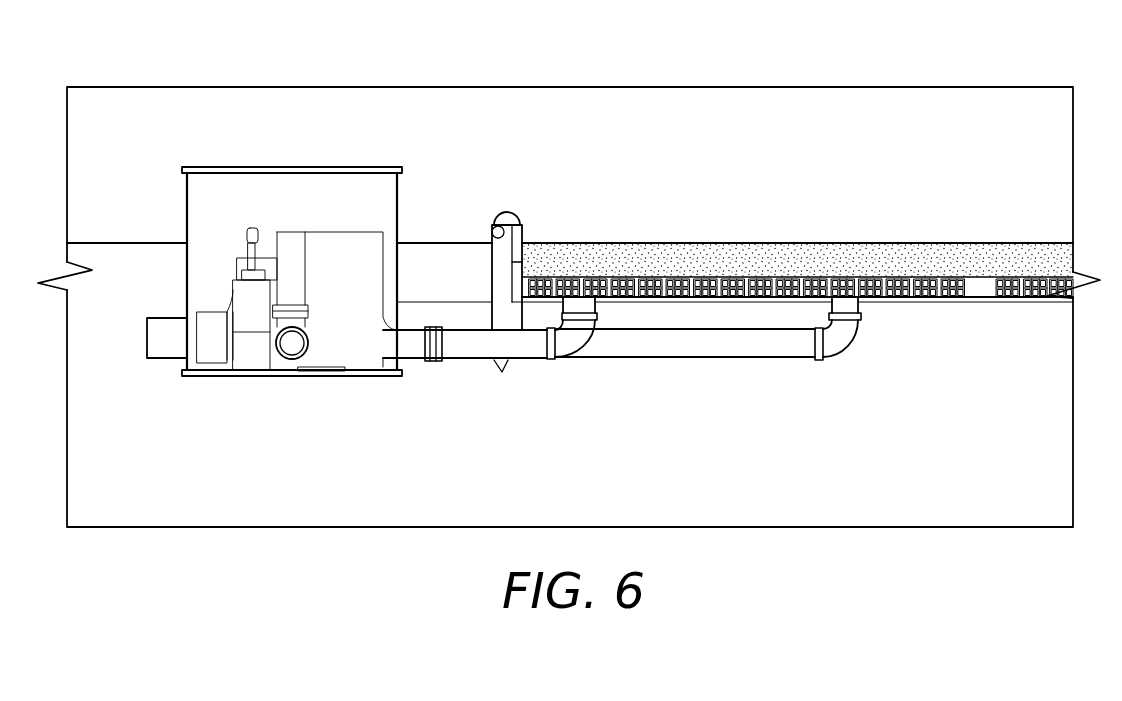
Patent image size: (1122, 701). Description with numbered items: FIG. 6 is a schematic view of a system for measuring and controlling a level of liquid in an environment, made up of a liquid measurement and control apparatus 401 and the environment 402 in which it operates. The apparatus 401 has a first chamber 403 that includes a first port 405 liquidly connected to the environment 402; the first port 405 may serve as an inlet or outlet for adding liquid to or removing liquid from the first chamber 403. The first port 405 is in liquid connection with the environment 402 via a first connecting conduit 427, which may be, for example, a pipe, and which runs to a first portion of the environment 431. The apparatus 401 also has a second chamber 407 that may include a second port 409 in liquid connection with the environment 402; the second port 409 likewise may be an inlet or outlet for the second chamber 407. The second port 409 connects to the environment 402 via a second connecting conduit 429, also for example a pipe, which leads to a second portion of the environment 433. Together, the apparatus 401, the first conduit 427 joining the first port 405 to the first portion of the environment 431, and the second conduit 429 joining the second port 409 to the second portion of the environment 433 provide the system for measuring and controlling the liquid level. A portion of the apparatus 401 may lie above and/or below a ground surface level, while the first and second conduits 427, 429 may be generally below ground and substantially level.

The liquid measurement and control apparatus 401 is at (257, 88).
The environment 402 is at (736, 132).
The first chamber 403 is at (342, 247).
The first port 405 is at (385, 348).
The second chamber 407 is at (212, 198).
The second port 409 is at (413, 348).
The first connecting conduit 427 is at (697, 348).
The second connecting conduit 429 is at (480, 350).
The first portion of the environment 431 is at (838, 278).
The second portion of the environment 433 is at (572, 278).